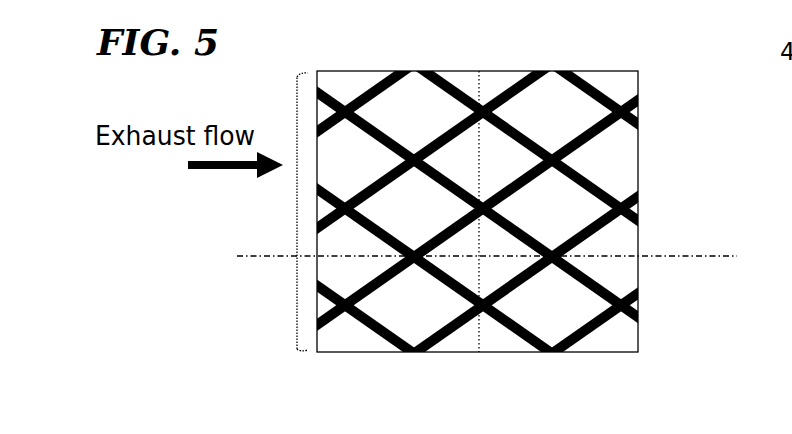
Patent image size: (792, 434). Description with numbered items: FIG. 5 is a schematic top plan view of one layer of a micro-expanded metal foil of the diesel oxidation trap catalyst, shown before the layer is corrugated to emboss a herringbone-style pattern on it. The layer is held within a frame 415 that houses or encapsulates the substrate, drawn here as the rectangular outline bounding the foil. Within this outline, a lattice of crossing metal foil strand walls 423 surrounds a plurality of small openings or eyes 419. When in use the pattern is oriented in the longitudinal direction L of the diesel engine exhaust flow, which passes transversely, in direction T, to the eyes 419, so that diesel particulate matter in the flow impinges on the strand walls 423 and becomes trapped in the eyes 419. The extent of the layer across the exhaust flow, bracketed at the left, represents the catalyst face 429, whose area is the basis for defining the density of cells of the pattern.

The frame 415 is at (640, 155).
The eye 419 is at (503, 263).
The metal foil strand wall 423 is at (368, 328).
The catalyst face 429 is at (297, 211).
The transverse direction T is at (480, 84).
The longitudinal direction L is at (452, 256).